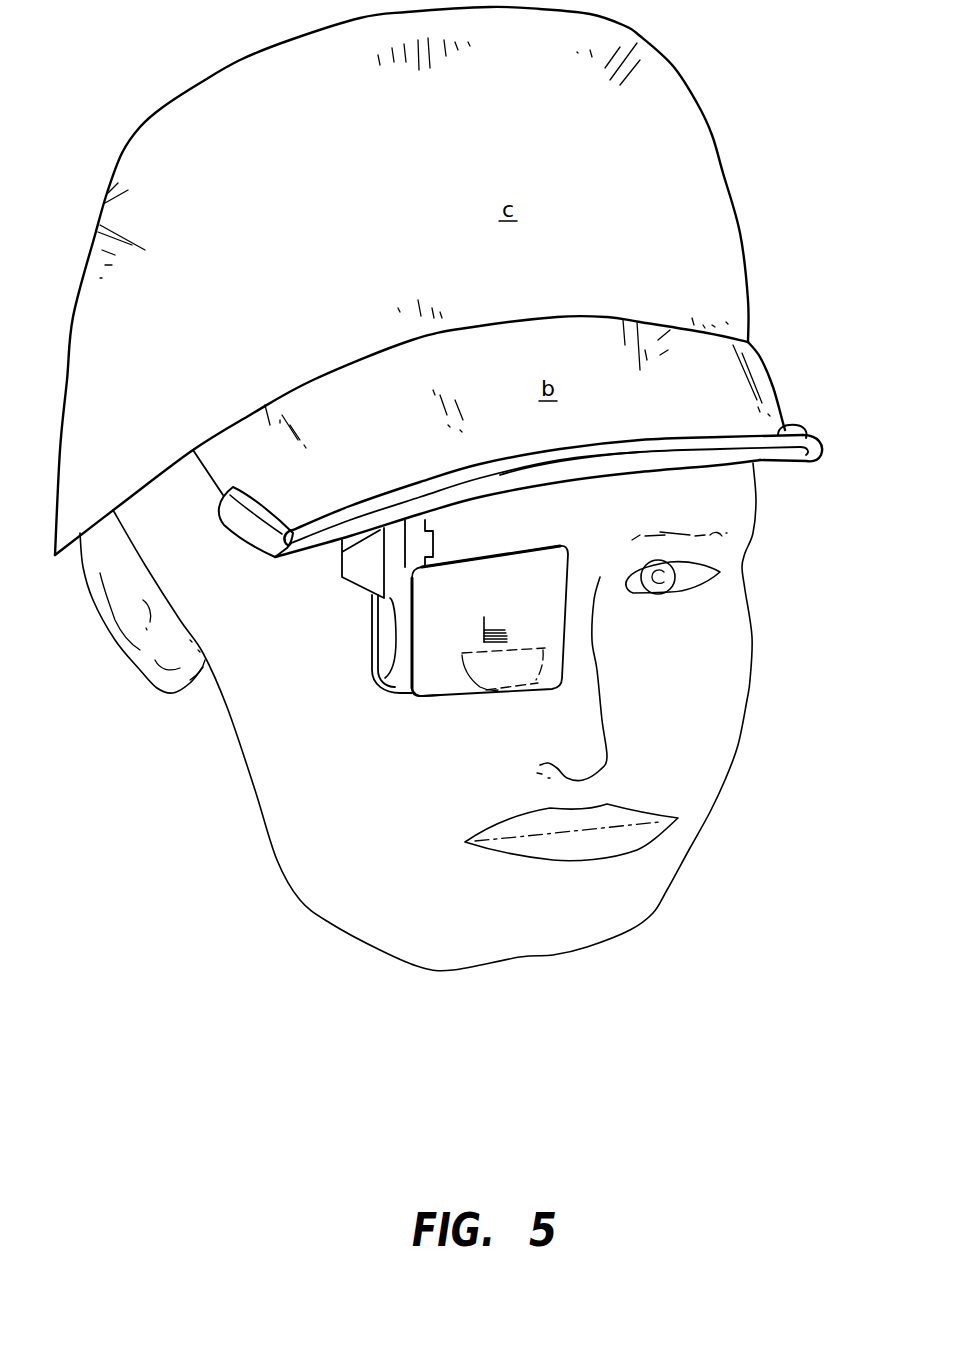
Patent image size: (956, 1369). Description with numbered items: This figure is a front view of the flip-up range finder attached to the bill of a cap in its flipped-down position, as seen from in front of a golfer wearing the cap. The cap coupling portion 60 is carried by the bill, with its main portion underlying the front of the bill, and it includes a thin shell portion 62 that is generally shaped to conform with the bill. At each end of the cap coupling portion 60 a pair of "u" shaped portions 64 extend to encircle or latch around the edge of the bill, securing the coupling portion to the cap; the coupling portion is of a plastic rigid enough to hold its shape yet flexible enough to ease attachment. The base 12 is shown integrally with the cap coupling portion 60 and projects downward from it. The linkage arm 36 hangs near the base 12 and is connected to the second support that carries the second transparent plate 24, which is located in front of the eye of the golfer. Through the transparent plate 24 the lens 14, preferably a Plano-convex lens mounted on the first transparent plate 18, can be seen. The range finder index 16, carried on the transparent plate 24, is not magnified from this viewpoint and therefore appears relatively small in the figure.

The base 12 is at (393, 573).
The lens 14 is at (510, 673).
The range finder index 16 is at (483, 617).
The transparent plate 18 is at (393, 660).
The second transparent plate 24 is at (433, 682).
The linkage arm 36 is at (397, 625).
The cap coupling portion 60 is at (690, 458).
The thin shell portion 62 is at (585, 462).
The "u" shaped portions 64 is at (253, 527).